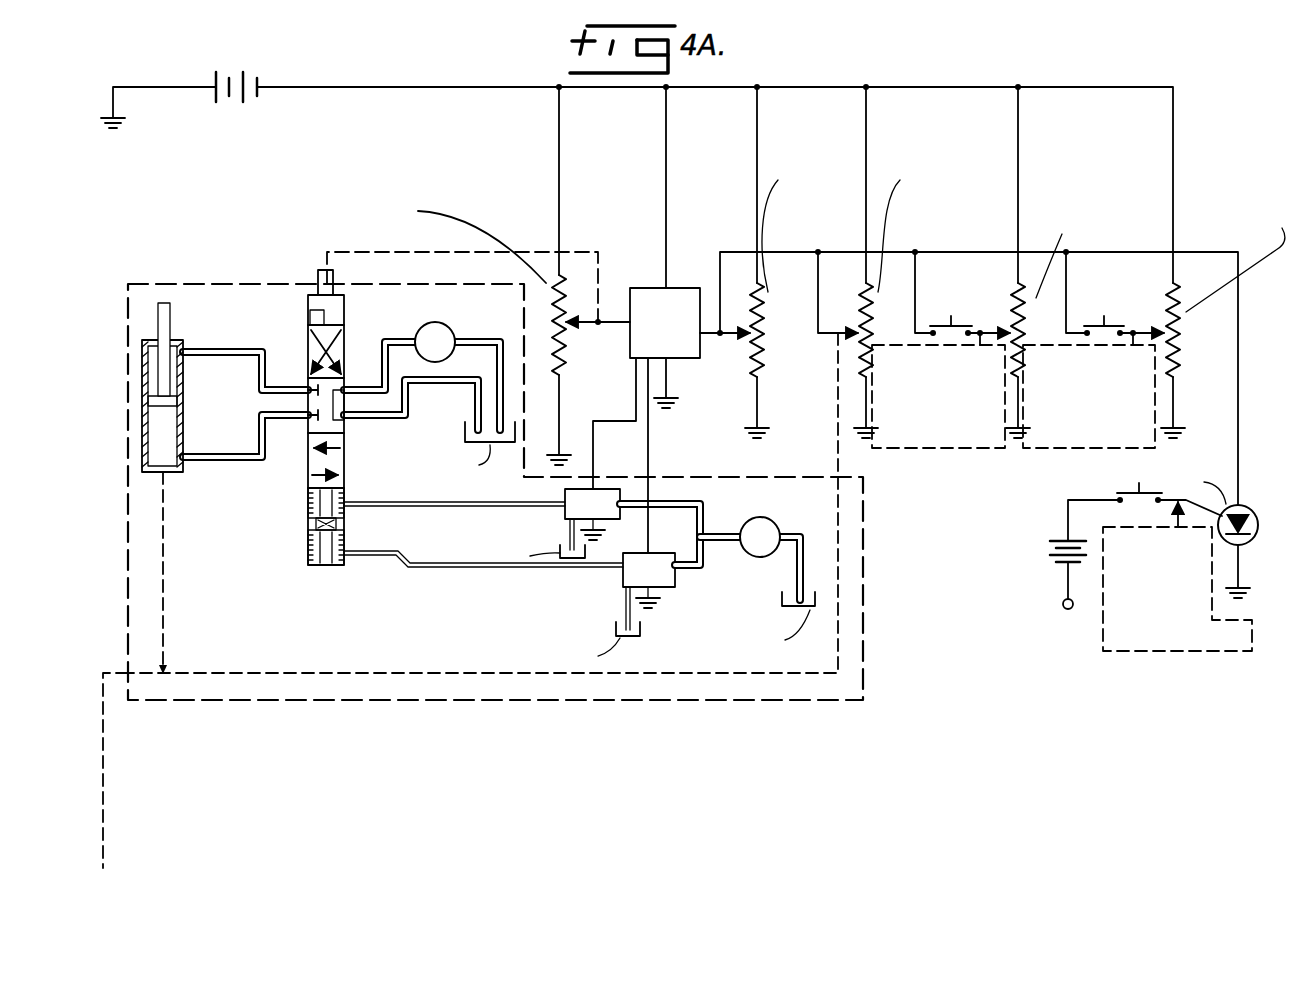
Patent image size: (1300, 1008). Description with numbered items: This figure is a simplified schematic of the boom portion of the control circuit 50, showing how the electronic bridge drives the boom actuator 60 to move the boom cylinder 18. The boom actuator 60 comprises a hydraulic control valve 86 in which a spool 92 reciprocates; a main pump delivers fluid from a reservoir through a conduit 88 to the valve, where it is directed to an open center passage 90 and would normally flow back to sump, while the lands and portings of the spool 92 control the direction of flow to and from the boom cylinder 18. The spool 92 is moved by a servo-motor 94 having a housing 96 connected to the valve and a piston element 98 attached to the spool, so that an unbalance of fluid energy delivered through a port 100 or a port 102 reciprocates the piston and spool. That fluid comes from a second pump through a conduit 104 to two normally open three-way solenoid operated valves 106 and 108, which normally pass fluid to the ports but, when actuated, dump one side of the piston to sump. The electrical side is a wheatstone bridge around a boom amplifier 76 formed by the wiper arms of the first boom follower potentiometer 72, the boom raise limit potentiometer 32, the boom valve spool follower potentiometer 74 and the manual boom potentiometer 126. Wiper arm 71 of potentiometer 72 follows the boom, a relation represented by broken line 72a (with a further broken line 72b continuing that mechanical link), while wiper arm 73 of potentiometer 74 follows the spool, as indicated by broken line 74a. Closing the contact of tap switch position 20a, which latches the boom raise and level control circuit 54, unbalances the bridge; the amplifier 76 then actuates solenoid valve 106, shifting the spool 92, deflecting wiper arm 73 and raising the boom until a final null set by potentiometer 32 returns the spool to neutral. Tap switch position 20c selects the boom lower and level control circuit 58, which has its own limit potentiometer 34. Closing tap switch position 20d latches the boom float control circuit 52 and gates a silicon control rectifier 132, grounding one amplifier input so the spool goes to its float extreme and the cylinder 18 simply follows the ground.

The control circuit 50 is at (1196, 122).
The boom actuator 60 is at (286, 283).
The boom cylinder 18 is at (168, 474).
The hydraulic control valve 86 is at (308, 352).
The spool 92 is at (318, 288).
The open center passage 90 is at (340, 425).
The conduit 88 is at (386, 338).
The piston element 98 is at (312, 520).
The housing 96 is at (308, 542).
The servo-motor 94 is at (304, 567).
The port 100 is at (346, 501).
The port 102 is at (348, 560).
The conduit 104 is at (706, 516).
The solenoid operated valve 106 is at (565, 514).
The solenoid operated valve 108 is at (675, 585).
The boom valve spool follower potentiometer 74 is at (478, 309).
The broken line 74a is at (571, 252).
The wiper arm 73 is at (574, 330).
The boom amplifier 76 is at (700, 288).
The manual boom potentiometer 126 is at (764, 350).
The wiper arm 71 is at (854, 330).
The first boom follower potentiometer 72 is at (871, 338).
The broken line 72a is at (416, 676).
The mechanical connection 72b is at (104, 816).
The tap switch position 20a is at (950, 316).
The boom raise limit potentiometer 32 is at (1026, 344).
The tap switch position 20c is at (1104, 316).
The boom lower limit pot 34 is at (1180, 372).
The boom raise and level control circuit 54 is at (934, 450).
The boom lower and level control circuit 58 is at (1044, 452).
The tap switch position 20d is at (1134, 490).
The silicon control rectifier 132 is at (1244, 506).
The boom float control circuit 52 is at (1130, 654).